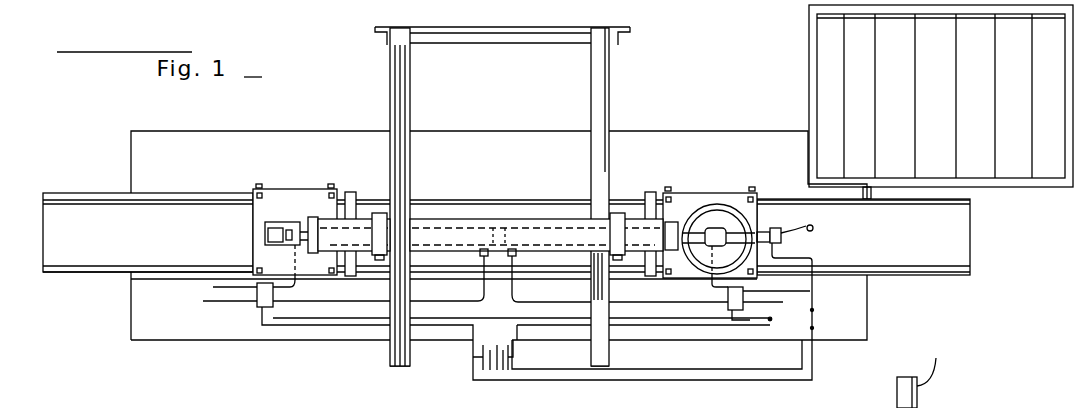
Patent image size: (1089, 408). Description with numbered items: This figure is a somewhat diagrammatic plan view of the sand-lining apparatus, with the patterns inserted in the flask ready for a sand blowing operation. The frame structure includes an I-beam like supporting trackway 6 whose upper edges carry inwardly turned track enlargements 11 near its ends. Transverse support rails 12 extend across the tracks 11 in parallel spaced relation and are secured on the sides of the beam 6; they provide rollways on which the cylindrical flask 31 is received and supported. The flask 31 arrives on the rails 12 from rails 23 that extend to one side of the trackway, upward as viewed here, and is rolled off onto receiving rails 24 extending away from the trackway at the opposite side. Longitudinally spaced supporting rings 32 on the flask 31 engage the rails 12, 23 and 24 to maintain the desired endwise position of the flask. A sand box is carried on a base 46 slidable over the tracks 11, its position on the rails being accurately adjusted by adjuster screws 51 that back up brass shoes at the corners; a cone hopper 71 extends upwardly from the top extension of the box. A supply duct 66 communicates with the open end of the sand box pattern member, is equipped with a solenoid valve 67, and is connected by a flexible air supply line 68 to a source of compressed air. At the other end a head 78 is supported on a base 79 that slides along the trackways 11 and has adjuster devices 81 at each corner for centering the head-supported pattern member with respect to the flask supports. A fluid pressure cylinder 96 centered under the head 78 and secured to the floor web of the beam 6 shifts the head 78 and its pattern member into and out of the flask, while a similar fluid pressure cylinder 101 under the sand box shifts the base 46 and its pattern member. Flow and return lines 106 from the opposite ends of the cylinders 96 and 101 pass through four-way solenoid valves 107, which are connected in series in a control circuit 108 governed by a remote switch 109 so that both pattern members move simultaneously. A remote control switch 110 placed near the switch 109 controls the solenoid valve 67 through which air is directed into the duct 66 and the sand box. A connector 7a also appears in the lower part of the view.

The supporting trackway 6 is at (942, 278).
The cable connector 7a is at (894, 383).
The track enlargements 11 is at (84, 262).
The transverse support rails 12 is at (607, 200).
The rails 23 is at (408, 97).
The receiving rails 24 is at (388, 348).
The flask 31 is at (350, 206).
The supporting rings 32 is at (388, 220).
The base 46 is at (727, 193).
The adjuster screw 51 is at (762, 188).
The supply duct 66 is at (772, 226).
The solenoid valve 67 is at (784, 231).
The flexible air supply line 68 is at (814, 229).
The cone hopper 71 is at (706, 206).
The head 78 is at (293, 216).
The base 79 is at (253, 229).
The adjuster devices 81 is at (259, 184).
The fluid pressure cylinder 96 is at (457, 224).
The fluid pressure cylinder 101 is at (548, 226).
The flow and return lines 106 is at (203, 300).
The four-way solenoid valves 107 is at (257, 303).
The control circuit 108 is at (579, 326).
The remote switch 109 is at (770, 329).
The remote control switch 110 is at (817, 331).